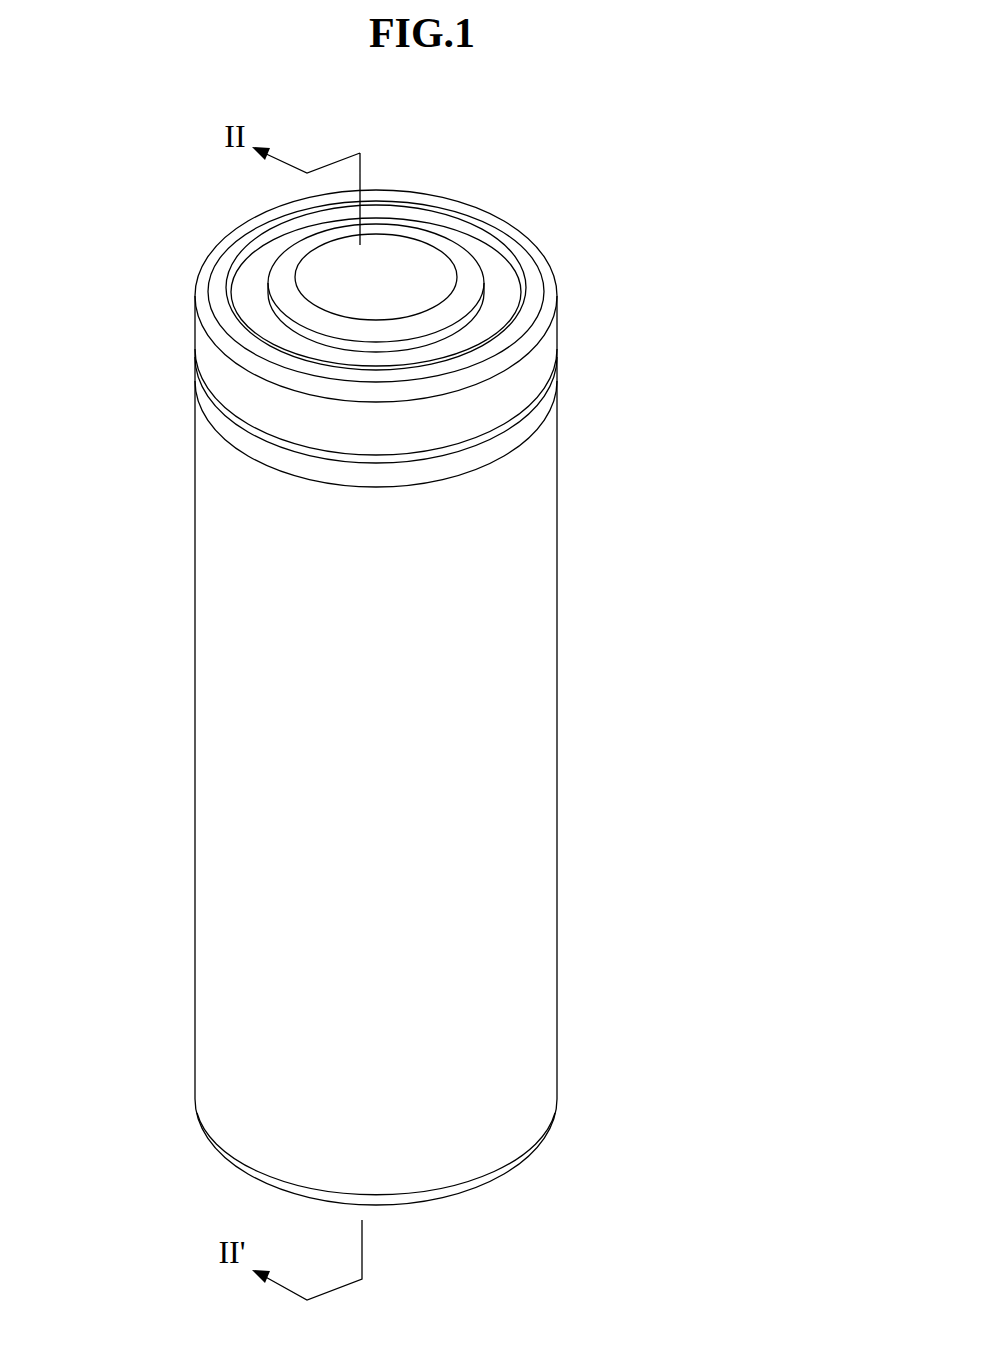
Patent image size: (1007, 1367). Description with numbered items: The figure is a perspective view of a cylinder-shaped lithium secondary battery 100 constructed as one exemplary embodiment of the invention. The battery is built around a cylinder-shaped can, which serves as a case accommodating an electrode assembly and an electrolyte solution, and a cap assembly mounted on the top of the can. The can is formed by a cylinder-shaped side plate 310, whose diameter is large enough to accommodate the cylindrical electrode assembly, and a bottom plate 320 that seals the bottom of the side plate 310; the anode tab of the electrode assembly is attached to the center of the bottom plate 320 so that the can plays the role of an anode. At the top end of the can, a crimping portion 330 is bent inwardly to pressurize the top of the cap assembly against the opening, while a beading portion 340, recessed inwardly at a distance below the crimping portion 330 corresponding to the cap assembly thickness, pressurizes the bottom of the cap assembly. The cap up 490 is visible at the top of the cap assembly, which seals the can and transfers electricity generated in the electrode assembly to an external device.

The lithium secondary battery 100 is at (645, 321).
The cylinder-shaped side plate 310 is at (515, 843).
The bottom plate 320 is at (500, 1173).
The crimping portion 330 is at (534, 275).
The beading portion 340 is at (513, 436).
The cap up 490 is at (398, 253).